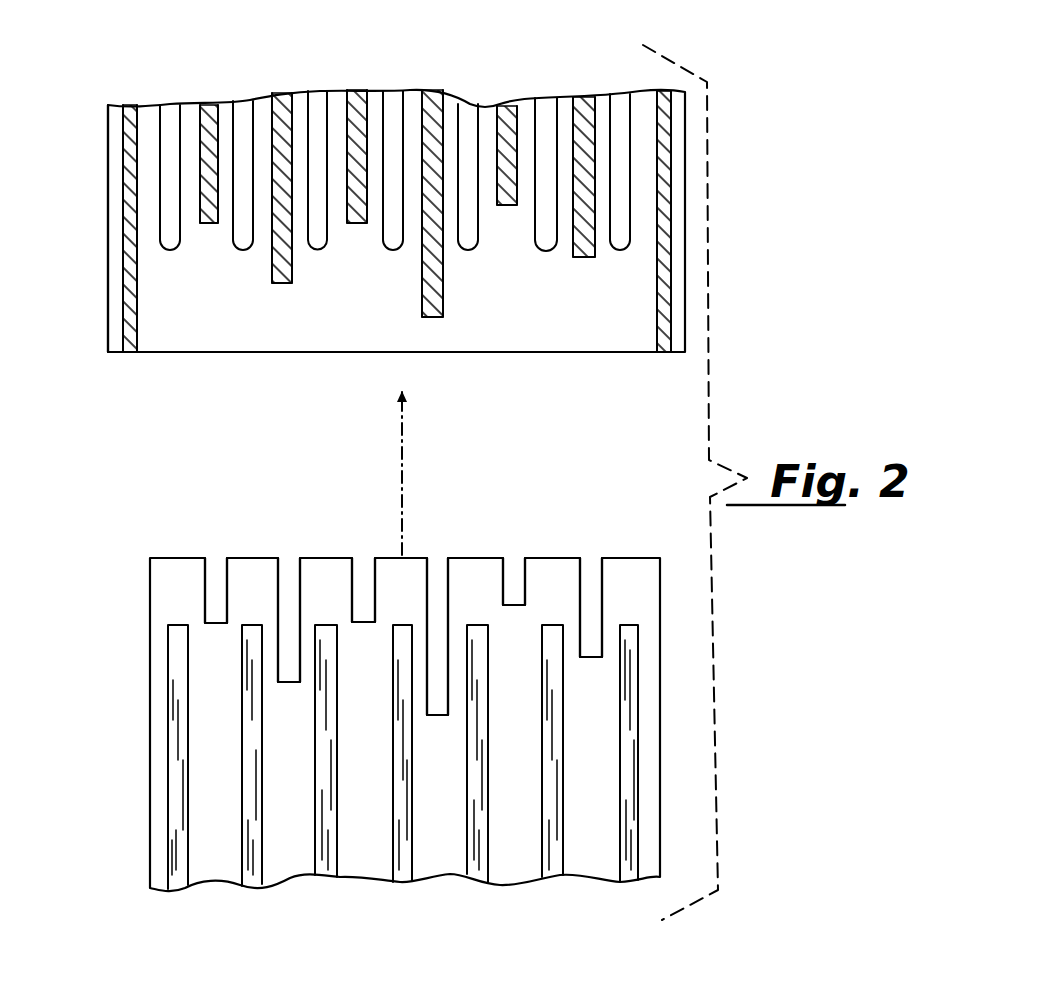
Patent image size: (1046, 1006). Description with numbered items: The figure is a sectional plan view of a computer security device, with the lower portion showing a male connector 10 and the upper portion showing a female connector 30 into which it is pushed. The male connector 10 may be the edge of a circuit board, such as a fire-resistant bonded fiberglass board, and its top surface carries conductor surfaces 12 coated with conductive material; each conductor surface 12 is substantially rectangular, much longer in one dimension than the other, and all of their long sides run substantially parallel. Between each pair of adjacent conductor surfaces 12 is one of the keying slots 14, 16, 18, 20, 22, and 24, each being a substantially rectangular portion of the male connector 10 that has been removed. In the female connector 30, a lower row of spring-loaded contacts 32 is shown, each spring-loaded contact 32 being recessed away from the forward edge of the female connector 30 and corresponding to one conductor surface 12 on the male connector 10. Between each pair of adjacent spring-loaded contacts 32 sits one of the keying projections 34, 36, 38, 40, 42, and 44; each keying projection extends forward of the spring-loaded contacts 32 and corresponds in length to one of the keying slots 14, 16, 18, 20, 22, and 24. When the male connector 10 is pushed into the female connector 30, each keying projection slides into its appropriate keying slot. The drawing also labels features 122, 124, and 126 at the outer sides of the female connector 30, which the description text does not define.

The male connector 10 is at (192, 540).
The conductor surfaces 12 is at (252, 872).
The keying slot 14 is at (214, 560).
The keying slot 16 is at (288, 560).
The keying slot 18 is at (363, 560).
The keying slot 20 is at (438, 560).
The keying slot 22 is at (513, 560).
The keying slot 24 is at (590, 560).
The female connector 30 is at (308, 360).
The spring-loaded contacts 32 is at (176, 242).
The keying projection 34 is at (207, 105).
The keying projection 36 is at (280, 93).
The keying projection 38 is at (357, 92).
The keying projection 40 is at (436, 92).
The keying projection 42 is at (505, 106).
The keying projection 44 is at (585, 97).
The die side wall 122 is at (106, 328).
The side insert 124 is at (661, 90).
The side insert 126 is at (130, 105).